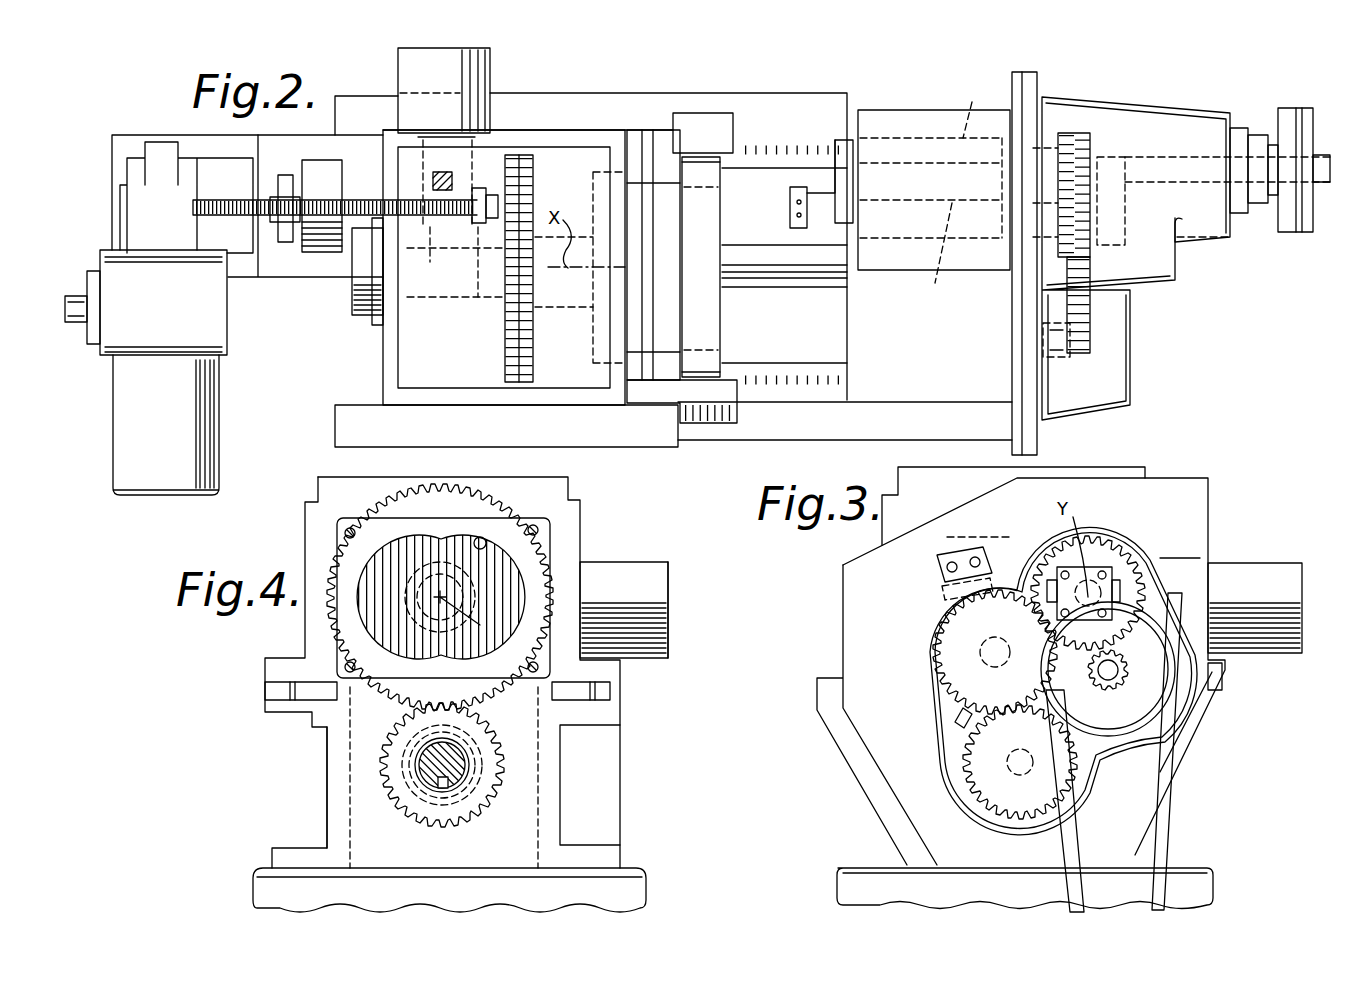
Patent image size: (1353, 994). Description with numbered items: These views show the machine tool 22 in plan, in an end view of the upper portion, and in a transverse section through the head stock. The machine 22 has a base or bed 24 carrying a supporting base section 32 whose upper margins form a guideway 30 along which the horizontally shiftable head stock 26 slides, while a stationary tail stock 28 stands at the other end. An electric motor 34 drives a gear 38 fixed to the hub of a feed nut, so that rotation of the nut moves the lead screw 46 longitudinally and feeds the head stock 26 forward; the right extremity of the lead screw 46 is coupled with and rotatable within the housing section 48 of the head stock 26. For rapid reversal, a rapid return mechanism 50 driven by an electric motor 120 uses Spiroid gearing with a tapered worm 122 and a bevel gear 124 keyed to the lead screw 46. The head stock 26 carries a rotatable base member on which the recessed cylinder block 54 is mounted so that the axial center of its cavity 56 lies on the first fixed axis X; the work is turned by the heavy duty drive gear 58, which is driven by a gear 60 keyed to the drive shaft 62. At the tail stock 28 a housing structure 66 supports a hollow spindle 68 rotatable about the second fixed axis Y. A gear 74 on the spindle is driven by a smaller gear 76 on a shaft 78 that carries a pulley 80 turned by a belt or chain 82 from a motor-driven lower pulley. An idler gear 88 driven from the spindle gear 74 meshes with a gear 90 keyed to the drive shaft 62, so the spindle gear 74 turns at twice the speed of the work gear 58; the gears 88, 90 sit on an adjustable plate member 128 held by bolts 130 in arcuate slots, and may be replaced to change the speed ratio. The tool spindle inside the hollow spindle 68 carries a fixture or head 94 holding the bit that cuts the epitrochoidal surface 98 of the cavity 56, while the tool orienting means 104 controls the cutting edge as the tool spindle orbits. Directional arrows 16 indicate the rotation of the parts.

In FIG. 3, the direction arrow 16 is at (997, 560).
In FIG. 2, the machine tool 22 is at (858, 88).
In FIG. 4, the base 24 is at (620, 871).
In FIG. 3, the base 24 is at (1190, 883).
In FIG. 2, the head stock 26 is at (562, 129).
In FIG. 4, the head stock 26 is at (568, 492).
In FIG. 2, the tail stock 28 is at (1078, 96).
In FIG. 3, the tail stock 28 is at (1177, 473).
In FIG. 2, the guideway 30 is at (776, 140).
In FIG. 4, the guideway 30 is at (290, 690).
In FIG. 4, the supporting base section 32 is at (327, 788).
In FIG. 2, the electric motor 34 is at (228, 394).
In FIG. 2, the gear 38 is at (287, 175).
In FIG. 2, the lead screw 46 is at (358, 200).
In FIG. 2, the housing section 48 is at (477, 165).
In FIG. 2, the rapid return mechanism 50 is at (396, 90).
In FIG. 4, the rapid return mechanism 50 is at (630, 565).
In FIG. 2, the cylinder block 54 is at (707, 318).
In FIG. 4, the cavity 56 is at (387, 560).
In FIG. 2, the drive gear 58 is at (527, 203).
In FIG. 4, the drive gear 58 is at (330, 620).
In FIG. 4, the gear 60 is at (493, 760).
In FIG. 4, the drive shaft 62 is at (467, 776).
In FIG. 3, the drive shaft 62 is at (1010, 767).
In FIG. 2, the housing structure 66 is at (979, 102).
In FIG. 2, the hollow spindle 68 is at (941, 263).
In FIG. 2, the gear 74 is at (1090, 133).
In FIG. 3, the gear 74 is at (1103, 553).
In FIG. 3, the gear 76 is at (1178, 706).
In FIG. 3, the shaft 78 is at (1118, 672).
In FIG. 2, the pulley 80 is at (1304, 222).
In FIG. 3, the pulley 80 is at (1140, 717).
In FIG. 3, the belt 82 is at (1070, 850).
In FIG. 2, the idler gear 88 is at (1090, 343).
In FIG. 3, the idler gear 88 is at (950, 645).
In FIG. 3, the gear 90 is at (987, 748).
In FIG. 2, the tool-accommodating fixture 94 is at (820, 200).
In FIG. 4, the epitrochoidal surface 98 is at (478, 540).
In FIG. 2, the tool orienting means 104 is at (1126, 206).
In FIG. 2, the electric motor 120 is at (400, 115).
In FIG. 4, the electric motor 120 is at (670, 563).
In FIG. 3, the electric motor 120 is at (1265, 577).
In FIG. 2, the Spiroid worm 122 is at (455, 318).
In FIG. 2, the bevel gear 124 is at (455, 262).
In FIG. 2, the adjustable plate member 128 is at (1070, 370).
In FIG. 3, the adjustable plate member 128 is at (940, 600).
In FIG. 3, the bolts 130 is at (957, 718).